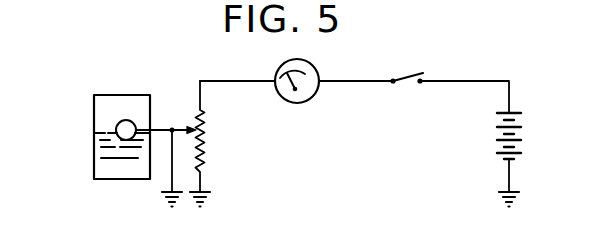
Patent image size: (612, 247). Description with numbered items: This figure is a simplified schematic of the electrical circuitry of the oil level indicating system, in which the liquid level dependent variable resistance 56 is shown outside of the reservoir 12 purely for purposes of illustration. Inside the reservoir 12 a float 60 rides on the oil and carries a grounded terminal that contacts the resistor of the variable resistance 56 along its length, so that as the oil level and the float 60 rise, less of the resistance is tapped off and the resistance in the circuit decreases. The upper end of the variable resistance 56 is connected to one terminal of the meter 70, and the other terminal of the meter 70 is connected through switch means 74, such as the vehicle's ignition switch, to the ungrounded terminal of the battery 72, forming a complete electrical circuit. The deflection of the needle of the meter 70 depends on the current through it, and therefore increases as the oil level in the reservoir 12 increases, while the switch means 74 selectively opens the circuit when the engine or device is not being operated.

The reservoir 12 is at (108, 90).
The float 60 is at (118, 128).
The liquid level dependent variable resistance 56 is at (214, 147).
The meter 70 is at (304, 103).
The switch means 74 is at (403, 83).
The battery 72 is at (533, 129).